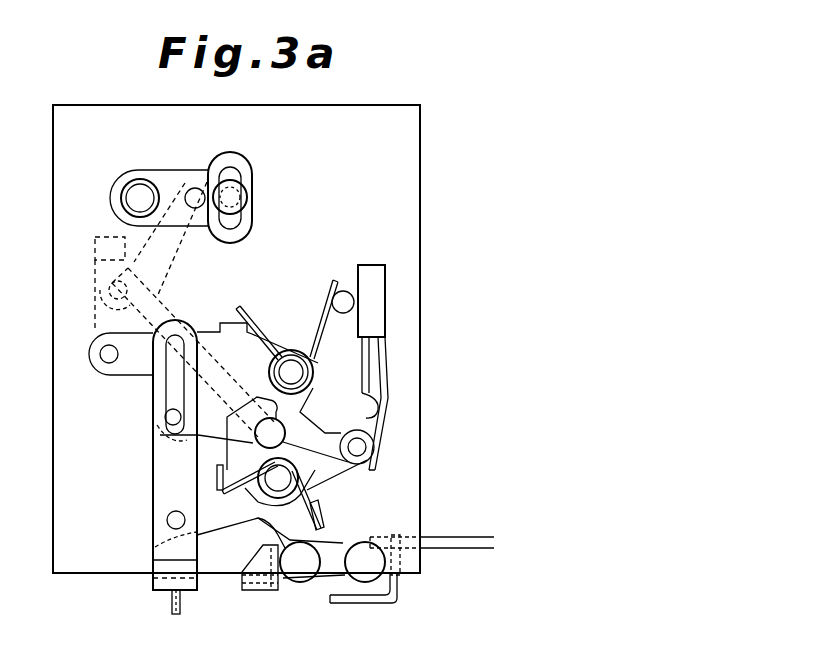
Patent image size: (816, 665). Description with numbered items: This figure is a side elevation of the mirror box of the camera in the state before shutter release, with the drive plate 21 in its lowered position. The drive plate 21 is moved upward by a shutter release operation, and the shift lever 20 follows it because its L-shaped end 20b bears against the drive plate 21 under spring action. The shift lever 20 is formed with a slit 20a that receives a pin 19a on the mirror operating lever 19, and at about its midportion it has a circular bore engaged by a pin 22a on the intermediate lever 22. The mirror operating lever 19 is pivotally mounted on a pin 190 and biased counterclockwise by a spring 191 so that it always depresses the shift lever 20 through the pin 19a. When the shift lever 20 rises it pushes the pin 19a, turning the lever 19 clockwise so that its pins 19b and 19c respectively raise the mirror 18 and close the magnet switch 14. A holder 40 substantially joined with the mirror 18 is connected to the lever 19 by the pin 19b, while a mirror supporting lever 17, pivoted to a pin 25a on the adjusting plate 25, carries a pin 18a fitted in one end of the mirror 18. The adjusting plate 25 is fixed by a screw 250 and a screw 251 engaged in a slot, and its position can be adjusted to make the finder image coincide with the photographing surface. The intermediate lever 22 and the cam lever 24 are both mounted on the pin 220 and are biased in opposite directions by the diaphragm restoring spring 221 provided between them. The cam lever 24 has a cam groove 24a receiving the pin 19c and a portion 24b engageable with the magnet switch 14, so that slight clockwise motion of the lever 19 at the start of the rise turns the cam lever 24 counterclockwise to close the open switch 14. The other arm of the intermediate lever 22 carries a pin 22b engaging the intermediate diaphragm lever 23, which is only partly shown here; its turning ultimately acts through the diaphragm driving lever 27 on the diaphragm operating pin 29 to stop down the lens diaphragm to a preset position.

The magnet switch 14 is at (370, 264).
The mirror supporting lever 17 is at (96, 257).
The mirror 18 is at (150, 300).
The pin 18a is at (110, 292).
The mirror operating lever 19 is at (208, 327).
The pin 19a is at (166, 419).
The pin 19b is at (107, 360).
The pin 19c is at (303, 421).
The shift lever 20 is at (165, 459).
The slit 20a is at (168, 397).
The L-shaped end 20b is at (162, 592).
The drive plate 21 is at (182, 606).
The intermediate lever 22 is at (262, 517).
The pin 22a is at (167, 521).
The pin 22b is at (300, 582).
The intermediate diaphragm lever 23 is at (261, 588).
The cam lever 24 is at (337, 462).
The cam groove 24a is at (272, 426).
The portion 24b is at (380, 455).
The adjusting plate 25 is at (186, 222).
The pin 25a is at (195, 190).
The diaphragm driving lever 27 is at (357, 606).
The diaphragm operating pin 29 is at (455, 537).
The holder 40 is at (117, 323).
The pin 190 is at (292, 366).
The spring 191 is at (322, 302).
The pin 220 is at (322, 513).
The diaphragm restoring spring 221 is at (248, 494).
The screw 250 is at (138, 192).
The screw 251 is at (244, 192).